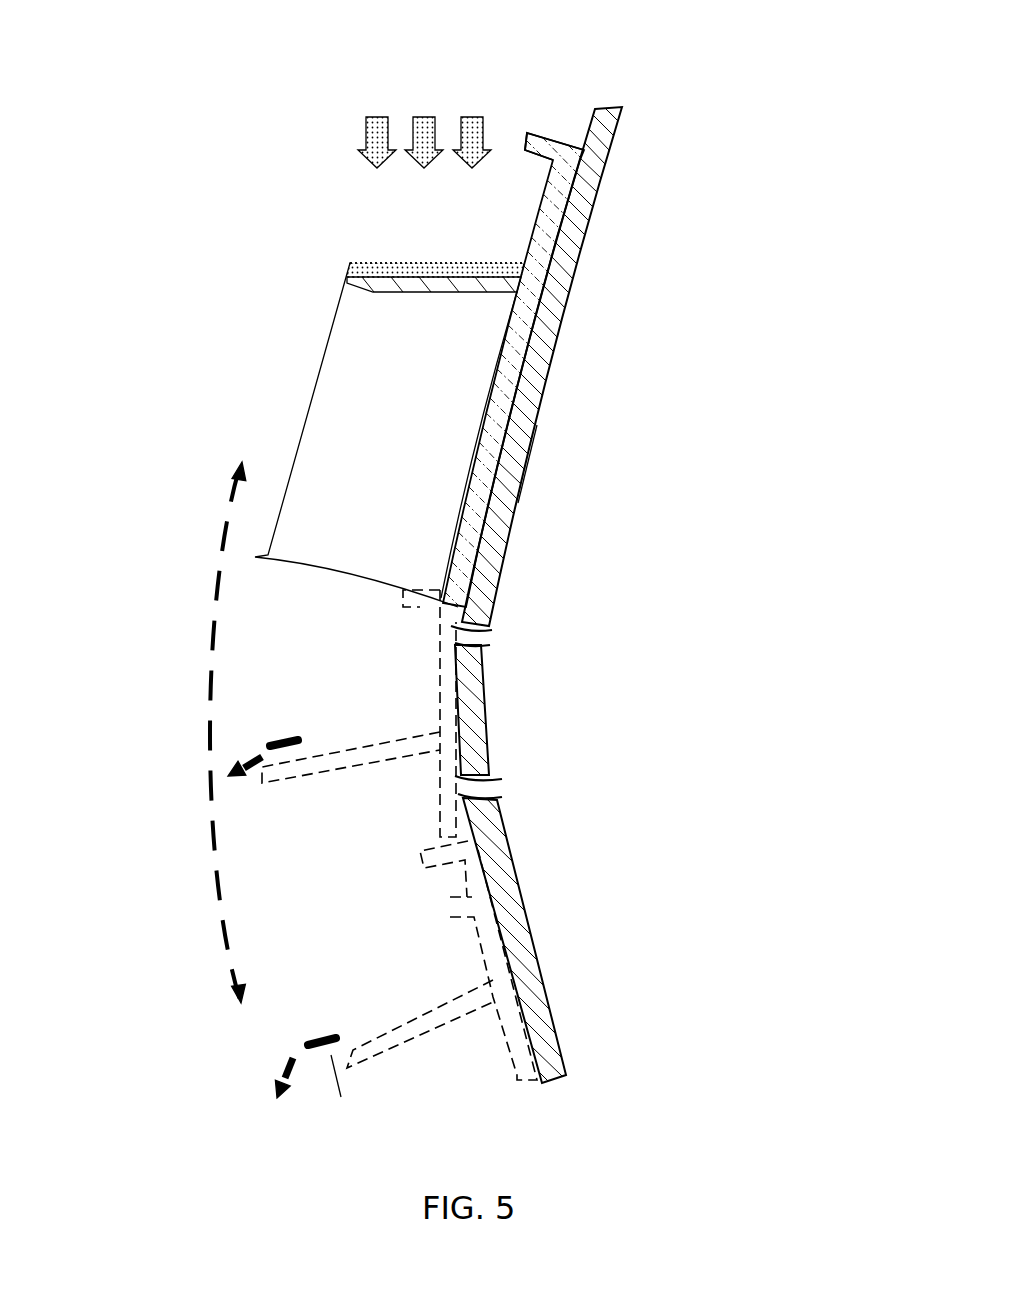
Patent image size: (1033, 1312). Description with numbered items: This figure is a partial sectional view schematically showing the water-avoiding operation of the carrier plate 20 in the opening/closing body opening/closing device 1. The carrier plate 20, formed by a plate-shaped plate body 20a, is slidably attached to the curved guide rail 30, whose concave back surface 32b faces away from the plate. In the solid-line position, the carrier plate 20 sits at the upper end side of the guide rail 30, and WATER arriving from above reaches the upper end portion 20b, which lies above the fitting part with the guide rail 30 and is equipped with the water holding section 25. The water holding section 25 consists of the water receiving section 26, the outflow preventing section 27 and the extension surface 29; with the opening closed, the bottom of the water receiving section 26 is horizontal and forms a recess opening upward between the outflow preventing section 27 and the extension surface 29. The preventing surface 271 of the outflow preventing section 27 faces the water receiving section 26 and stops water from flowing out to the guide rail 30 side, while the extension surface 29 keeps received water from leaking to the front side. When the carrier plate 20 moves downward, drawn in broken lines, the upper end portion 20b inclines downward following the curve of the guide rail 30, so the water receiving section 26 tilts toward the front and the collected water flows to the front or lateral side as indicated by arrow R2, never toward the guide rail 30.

The opening/closing body opening/closing device 1 is at (696, 58).
The carrier plate 20 is at (353, 723).
The plate body 20a is at (298, 411).
The upper end portion 20b is at (318, 270).
The water holding section 25 is at (690, 190).
The water receiving section 26 is at (496, 269).
The outflow preventing section 27 is at (562, 215).
The preventing surface 271 is at (556, 213).
The extension surface 29 is at (342, 260).
The guide rail 30 is at (568, 333).
The back surface 32b is at (535, 446).
The arrow R2 is at (253, 780).
The water WATER is at (400, 267).